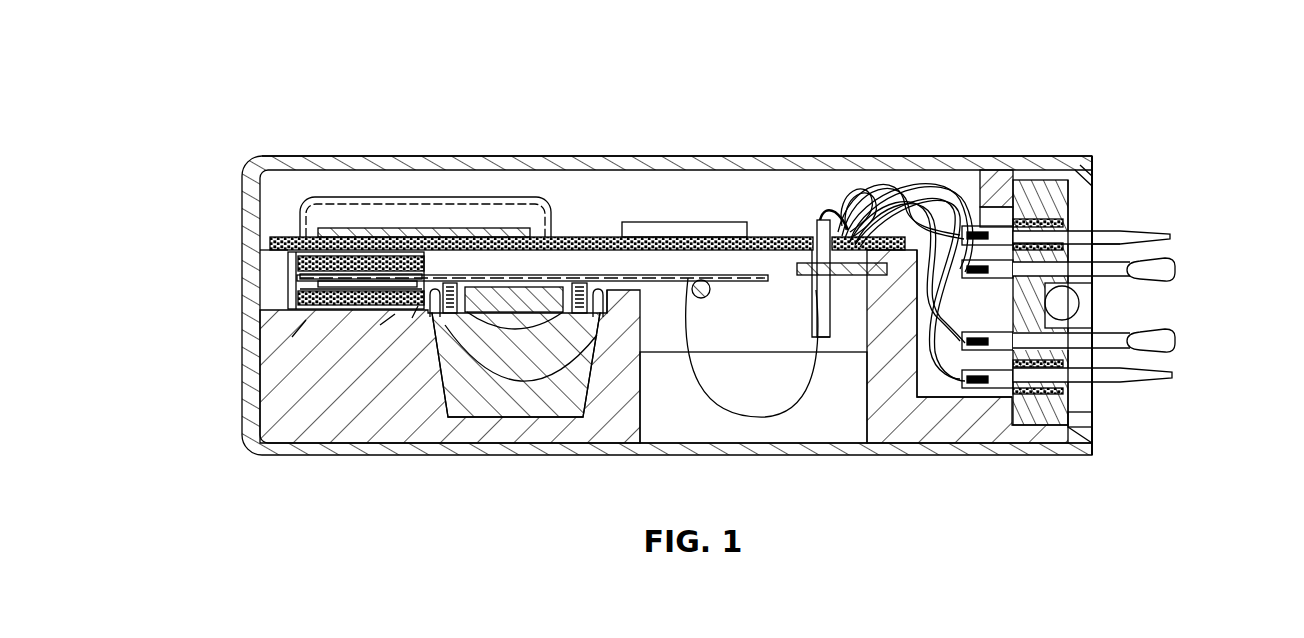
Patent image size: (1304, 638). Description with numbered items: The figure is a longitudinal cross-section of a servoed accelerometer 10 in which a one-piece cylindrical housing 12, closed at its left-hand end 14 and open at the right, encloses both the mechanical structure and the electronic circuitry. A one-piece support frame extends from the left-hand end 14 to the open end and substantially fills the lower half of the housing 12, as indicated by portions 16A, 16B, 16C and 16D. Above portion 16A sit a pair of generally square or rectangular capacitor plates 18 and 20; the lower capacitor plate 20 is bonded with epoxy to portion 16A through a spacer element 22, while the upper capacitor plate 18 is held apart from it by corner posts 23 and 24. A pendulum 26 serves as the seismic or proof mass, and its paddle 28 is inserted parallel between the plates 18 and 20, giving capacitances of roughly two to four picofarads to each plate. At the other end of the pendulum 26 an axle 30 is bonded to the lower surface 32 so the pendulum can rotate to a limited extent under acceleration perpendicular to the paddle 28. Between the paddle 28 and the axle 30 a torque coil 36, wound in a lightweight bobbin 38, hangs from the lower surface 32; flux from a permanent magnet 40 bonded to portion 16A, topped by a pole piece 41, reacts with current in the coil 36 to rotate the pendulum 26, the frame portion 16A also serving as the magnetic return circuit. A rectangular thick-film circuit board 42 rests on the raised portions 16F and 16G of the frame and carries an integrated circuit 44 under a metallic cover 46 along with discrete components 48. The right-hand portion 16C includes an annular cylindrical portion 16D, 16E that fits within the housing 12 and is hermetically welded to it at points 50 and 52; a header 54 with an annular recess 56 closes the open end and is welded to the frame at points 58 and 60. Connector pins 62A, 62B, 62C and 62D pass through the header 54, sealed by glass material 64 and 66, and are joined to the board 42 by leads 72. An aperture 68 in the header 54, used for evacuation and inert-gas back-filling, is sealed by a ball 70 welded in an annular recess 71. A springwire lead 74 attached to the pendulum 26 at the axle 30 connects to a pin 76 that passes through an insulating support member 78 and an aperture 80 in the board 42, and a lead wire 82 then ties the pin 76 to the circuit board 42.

The accelerometer 10 is at (735, 119).
The housing 12 is at (560, 157).
The left-hand end 14 is at (243, 400).
The support frame portion 16A is at (313, 432).
The support frame portion 16B is at (700, 432).
The right-hand support frame portion 16C is at (885, 432).
The annular support frame portion 16D is at (1010, 432).
The annular support frame portion 16E is at (1050, 176).
The upward extension 16F is at (300, 290).
The upwardly extending portion 16G is at (903, 262).
The upper capacitor plate 18 is at (300, 258).
The lower capacitor plate 20 is at (295, 298).
The spacer element 22 is at (284, 340).
The post 23 is at (300, 276).
The post 24 is at (412, 318).
The pendulum 26 is at (620, 277).
The paddle 28 is at (380, 325).
The axle 30 is at (710, 291).
The lower surface 32 is at (667, 282).
The torque coil 36 is at (521, 369).
The bobbin 38 is at (515, 336).
The permanent magnet 40 is at (448, 400).
The pole piece 41 is at (512, 288).
The circuit board 42 is at (570, 237).
The integrated circuit 44 is at (493, 230).
The metallic cover 46 is at (338, 198).
The discrete electronic components 48 is at (694, 222).
The weld point 50 is at (1095, 163).
The weld point 52 is at (1092, 443).
The header 54 is at (1075, 205).
The annular recess 56 is at (1075, 222).
The weld point 58 is at (1100, 182).
The weld point 60 is at (1092, 427).
The connector pin 62A is at (1168, 236).
The connector pin 62B is at (1175, 276).
The connector pin 62C is at (1175, 339).
The connector pin 62D is at (1172, 377).
The glass material 64 is at (1095, 243).
The glass material 66 is at (1068, 393).
The aperture 68 is at (1013, 305).
The ball 70 is at (1088, 300).
The annular recess 71 is at (1090, 320).
The leads 72 is at (938, 200).
The springwire lead 74 is at (690, 365).
The pin 76 is at (815, 293).
The support member 78 is at (853, 273).
The aperture 80 is at (815, 233).
The lead wire 82 is at (827, 217).